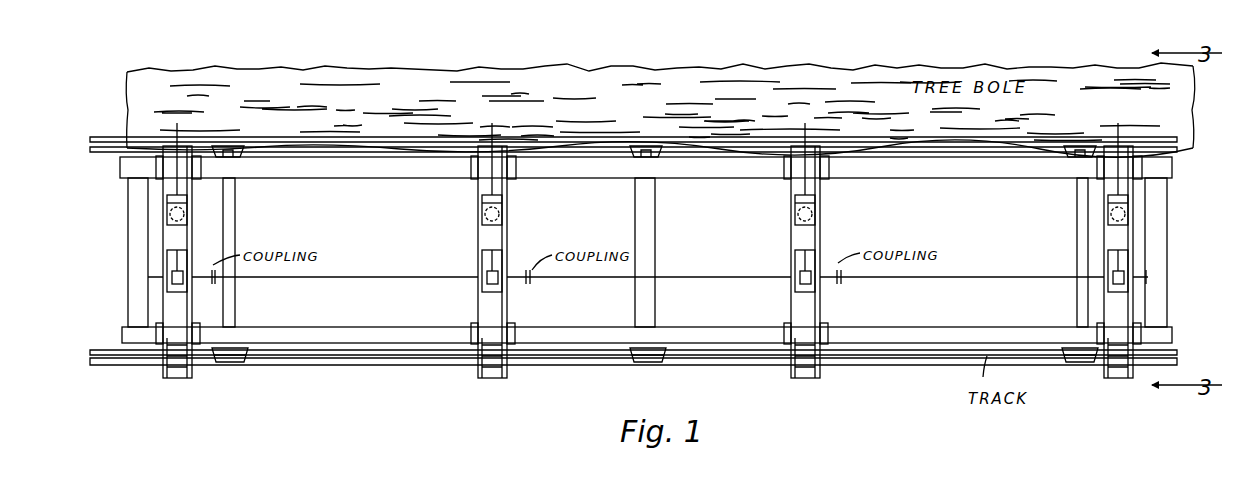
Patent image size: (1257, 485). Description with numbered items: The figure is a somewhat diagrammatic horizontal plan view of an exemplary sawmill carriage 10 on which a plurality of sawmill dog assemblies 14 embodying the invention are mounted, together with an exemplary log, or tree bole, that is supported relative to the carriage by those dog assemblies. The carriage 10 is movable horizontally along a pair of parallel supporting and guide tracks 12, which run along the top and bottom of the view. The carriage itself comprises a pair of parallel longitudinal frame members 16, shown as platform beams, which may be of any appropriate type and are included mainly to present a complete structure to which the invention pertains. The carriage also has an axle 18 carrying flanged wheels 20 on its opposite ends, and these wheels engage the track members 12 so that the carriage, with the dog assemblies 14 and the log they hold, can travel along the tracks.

The sawmill carriage 10 is at (390, 167).
The supporting and guide tracks 12 is at (1177, 150).
The sawmill dog assemblies 14 is at (197, 221).
The longitudinal frame members 16 is at (788, 178).
The axle 18 is at (227, 298).
The flanged wheels 20 is at (230, 358).